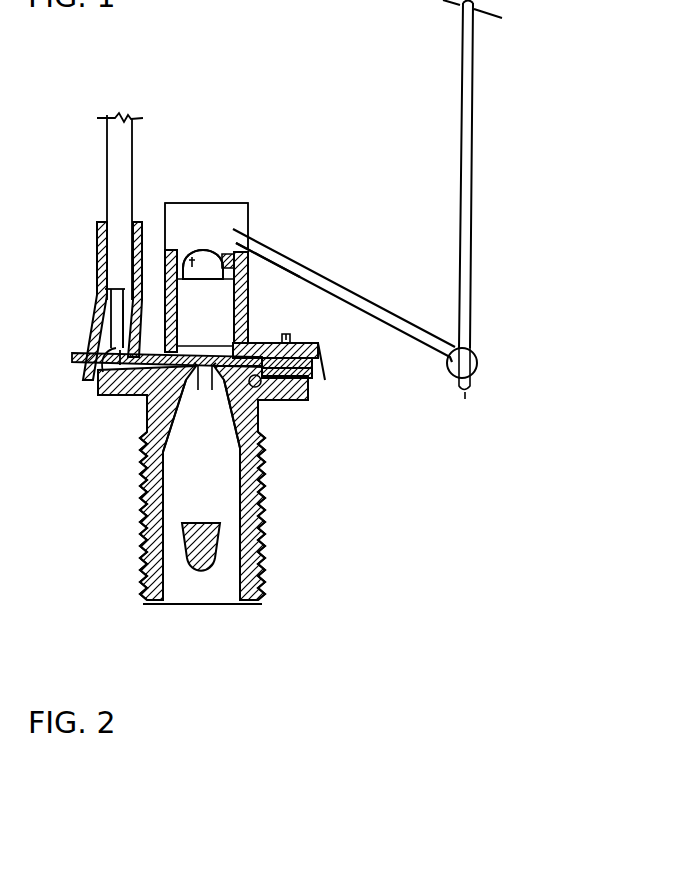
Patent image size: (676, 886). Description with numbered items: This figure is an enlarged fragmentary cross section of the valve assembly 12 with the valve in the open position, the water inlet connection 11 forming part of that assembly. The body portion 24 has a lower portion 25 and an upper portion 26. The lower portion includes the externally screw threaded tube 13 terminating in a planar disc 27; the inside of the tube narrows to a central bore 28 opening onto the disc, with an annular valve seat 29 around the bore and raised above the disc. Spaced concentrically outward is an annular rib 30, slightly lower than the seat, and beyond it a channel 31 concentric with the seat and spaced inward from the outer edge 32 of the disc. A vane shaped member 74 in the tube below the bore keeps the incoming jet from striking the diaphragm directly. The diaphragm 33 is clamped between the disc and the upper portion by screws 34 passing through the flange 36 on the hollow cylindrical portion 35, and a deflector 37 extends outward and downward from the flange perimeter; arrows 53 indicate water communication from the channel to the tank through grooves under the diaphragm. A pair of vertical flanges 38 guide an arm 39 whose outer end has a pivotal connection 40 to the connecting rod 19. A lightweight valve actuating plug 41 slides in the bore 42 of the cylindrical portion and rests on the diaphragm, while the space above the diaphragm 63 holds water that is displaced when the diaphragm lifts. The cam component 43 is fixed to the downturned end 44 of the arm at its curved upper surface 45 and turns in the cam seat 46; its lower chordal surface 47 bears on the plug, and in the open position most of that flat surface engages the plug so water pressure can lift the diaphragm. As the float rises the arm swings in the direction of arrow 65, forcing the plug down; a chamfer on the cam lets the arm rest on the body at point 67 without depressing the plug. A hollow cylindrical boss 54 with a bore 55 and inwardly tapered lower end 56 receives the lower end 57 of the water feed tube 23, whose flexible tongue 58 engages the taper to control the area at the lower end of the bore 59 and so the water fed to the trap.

The water inlet connection 11 is at (142, 562).
The valve assembly 12 is at (296, 230).
The externally screw threaded tube 13 is at (262, 598).
The connecting rod 19 is at (472, 287).
The water feed tube 23 is at (122, 138).
The body portion 24 is at (138, 454).
The lower portion 25 is at (251, 524).
The upper portion 26 is at (244, 296).
The planar disc 27 is at (298, 396).
The central bore 28 is at (199, 416).
The annular valve seat 29 is at (147, 483).
The annular rib 30 is at (259, 402).
The channel 31 is at (125, 396).
The outer edge 32 is at (290, 382).
The diaphragm 33 is at (320, 367).
The screws 34 is at (292, 334).
The hollow cylindrical portion 35 is at (240, 306).
The flange 36 is at (320, 348).
The deflector 37 is at (326, 376).
The flanges 38 is at (217, 213).
The arm 39 is at (367, 300).
The pivotal connection 40 is at (474, 354).
The valve actuating plug 41 is at (218, 310).
The bore 42 is at (162, 256).
The cam component 43 is at (208, 246).
The downturned end 44 is at (243, 225).
The curved upper surface 45 is at (190, 252).
The cam seat 46 is at (173, 252).
The lower chordal surface 47 is at (184, 272).
The arrows 53 is at (346, 427).
The hollow cylindrical boss 54 is at (98, 266).
The bore 55 is at (112, 298).
The inwardly tapered lower end 56 is at (116, 315).
The lower end of the tube 57 is at (107, 152).
The flexible tongue 58 is at (100, 289).
The lower end of the bore 59 is at (102, 348).
The space above the diaphragm 63 is at (252, 350).
The arrow 65 is at (512, 437).
The point 67 is at (263, 247).
The vane shaped member 74 is at (203, 572).